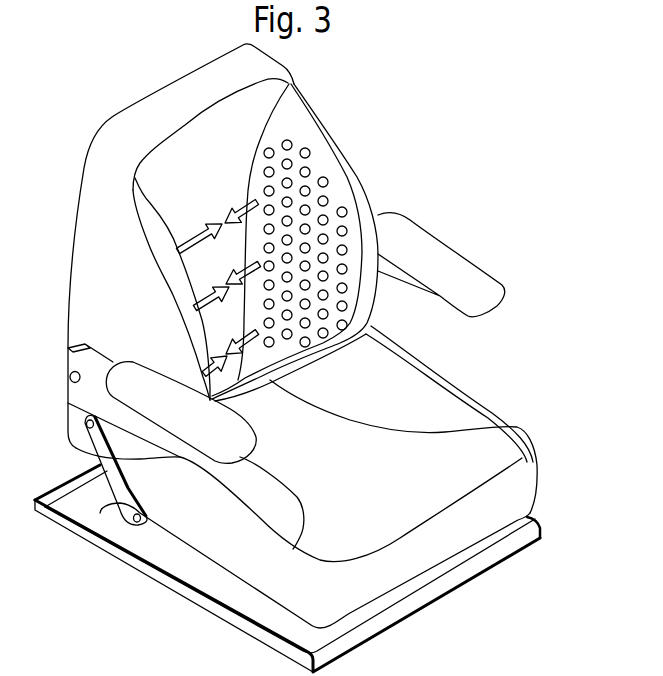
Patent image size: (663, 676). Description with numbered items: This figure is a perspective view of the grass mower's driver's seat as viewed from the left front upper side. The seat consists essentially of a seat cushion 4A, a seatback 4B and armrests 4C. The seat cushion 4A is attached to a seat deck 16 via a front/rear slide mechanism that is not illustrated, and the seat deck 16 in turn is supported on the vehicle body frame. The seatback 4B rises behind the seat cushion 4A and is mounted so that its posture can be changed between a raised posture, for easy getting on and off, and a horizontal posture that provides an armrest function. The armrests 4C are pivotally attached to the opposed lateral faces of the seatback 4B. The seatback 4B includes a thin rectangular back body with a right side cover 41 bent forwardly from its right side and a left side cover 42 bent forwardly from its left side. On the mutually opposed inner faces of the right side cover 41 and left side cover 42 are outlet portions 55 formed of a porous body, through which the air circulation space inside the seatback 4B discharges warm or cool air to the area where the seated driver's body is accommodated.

The seatback 4B is at (186, 107).
The right side cover 41 is at (355, 186).
The left side cover 42 is at (177, 272).
The outlet portions 55 is at (268, 192).
The armrests 4C is at (150, 390).
The seat cushion 4A is at (430, 538).
The seat deck 16 is at (160, 575).